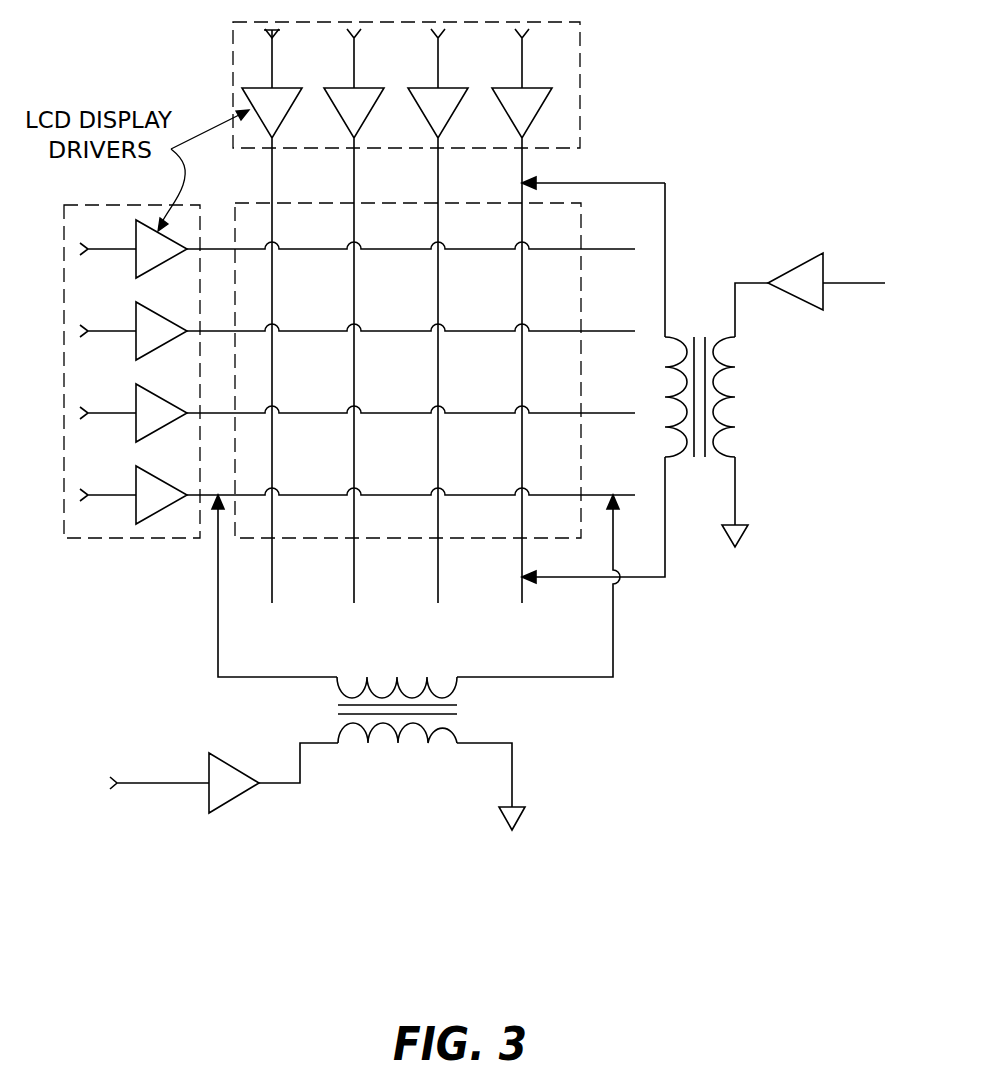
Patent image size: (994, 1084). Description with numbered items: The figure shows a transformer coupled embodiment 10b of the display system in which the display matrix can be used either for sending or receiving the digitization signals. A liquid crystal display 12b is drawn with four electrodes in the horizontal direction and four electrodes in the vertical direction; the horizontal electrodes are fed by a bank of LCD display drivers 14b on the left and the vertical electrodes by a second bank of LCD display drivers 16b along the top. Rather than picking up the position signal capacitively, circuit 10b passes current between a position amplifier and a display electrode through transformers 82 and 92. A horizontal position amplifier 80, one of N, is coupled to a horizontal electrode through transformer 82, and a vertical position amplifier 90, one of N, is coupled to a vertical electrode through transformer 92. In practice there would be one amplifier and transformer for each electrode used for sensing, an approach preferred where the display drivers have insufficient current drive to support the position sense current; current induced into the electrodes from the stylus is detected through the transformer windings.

The transformer coupled embodiment 10b is at (750, 46).
The liquid crystal display 12b is at (575, 234).
The LCD display drivers 14b is at (133, 538).
The LCD display drivers 16b is at (580, 80).
The horizontal position amplifier 80 is at (803, 258).
The transformer 82 is at (700, 335).
The vertical position amplifier 90 is at (227, 765).
The transformer 92 is at (462, 712).